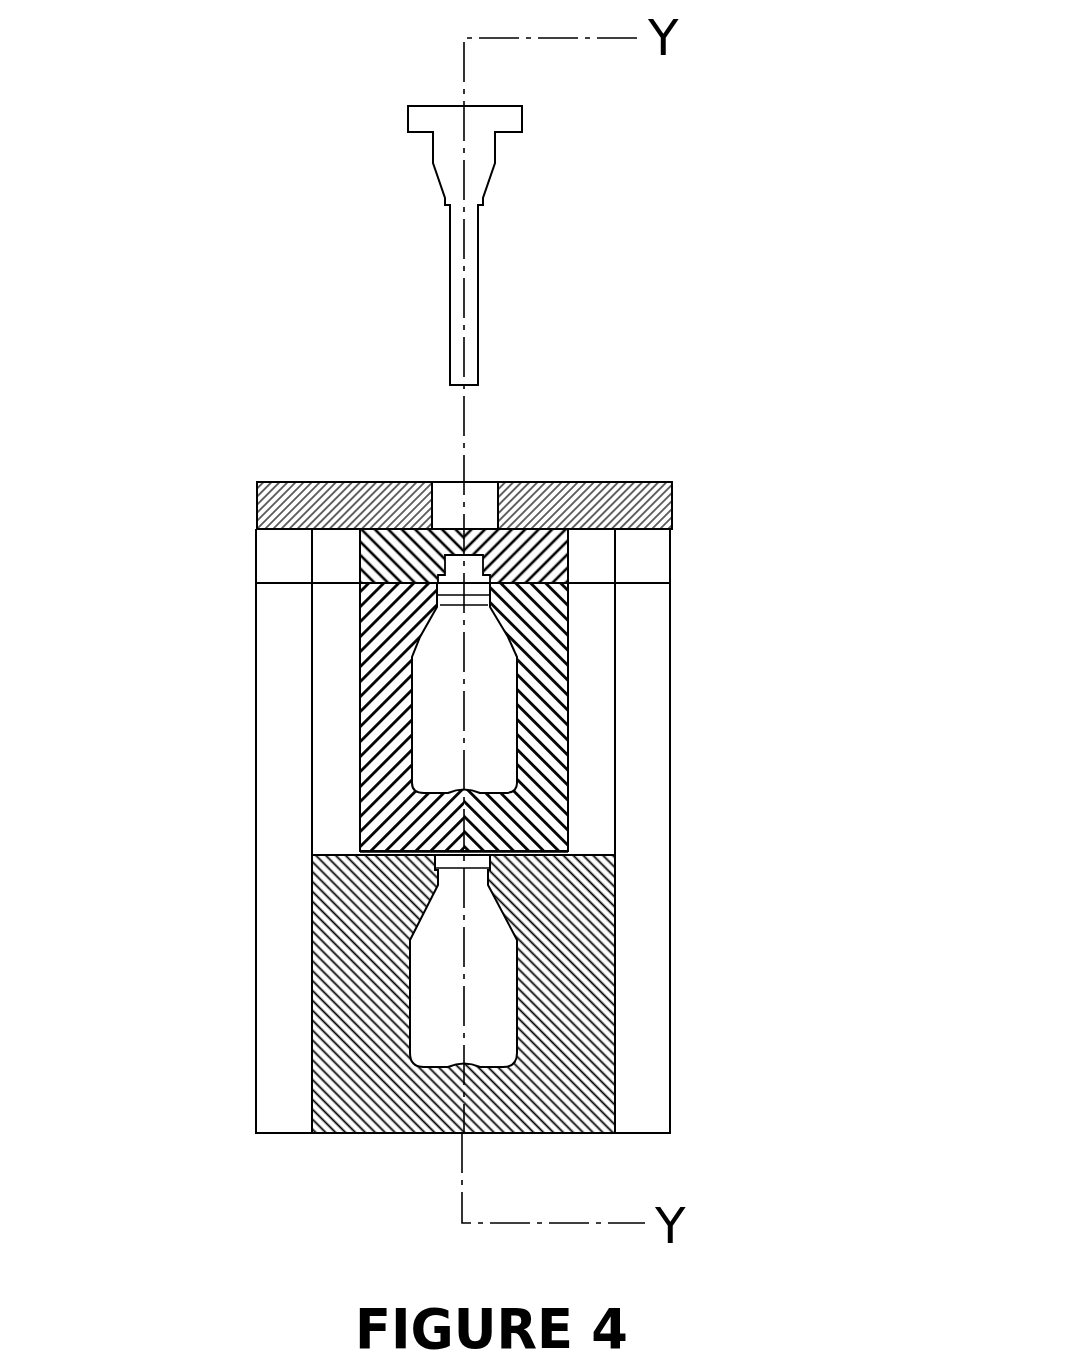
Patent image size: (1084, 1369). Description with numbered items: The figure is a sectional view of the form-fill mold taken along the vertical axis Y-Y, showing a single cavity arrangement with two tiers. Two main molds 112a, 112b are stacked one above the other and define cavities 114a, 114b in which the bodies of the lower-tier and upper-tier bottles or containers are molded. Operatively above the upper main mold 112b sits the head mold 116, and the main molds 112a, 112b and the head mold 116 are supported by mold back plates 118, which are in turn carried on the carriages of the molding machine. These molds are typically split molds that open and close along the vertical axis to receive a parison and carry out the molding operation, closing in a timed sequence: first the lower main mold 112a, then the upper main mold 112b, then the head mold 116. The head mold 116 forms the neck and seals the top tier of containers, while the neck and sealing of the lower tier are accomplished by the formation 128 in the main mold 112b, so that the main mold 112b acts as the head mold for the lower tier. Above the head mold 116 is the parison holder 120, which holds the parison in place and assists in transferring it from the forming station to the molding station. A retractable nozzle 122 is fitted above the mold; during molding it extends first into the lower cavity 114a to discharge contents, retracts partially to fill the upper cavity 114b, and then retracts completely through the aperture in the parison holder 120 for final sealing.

The main mold 112a is at (383, 1087).
The main mold 112b is at (568, 797).
The cavity 114a is at (642, 1008).
The cavity 114b is at (490, 700).
The head mold 116 is at (568, 558).
The mold back plates 118 is at (295, 1007).
The parison holder 120 is at (672, 508).
The retractable nozzle 122 is at (480, 265).
The formation 128 is at (490, 852).